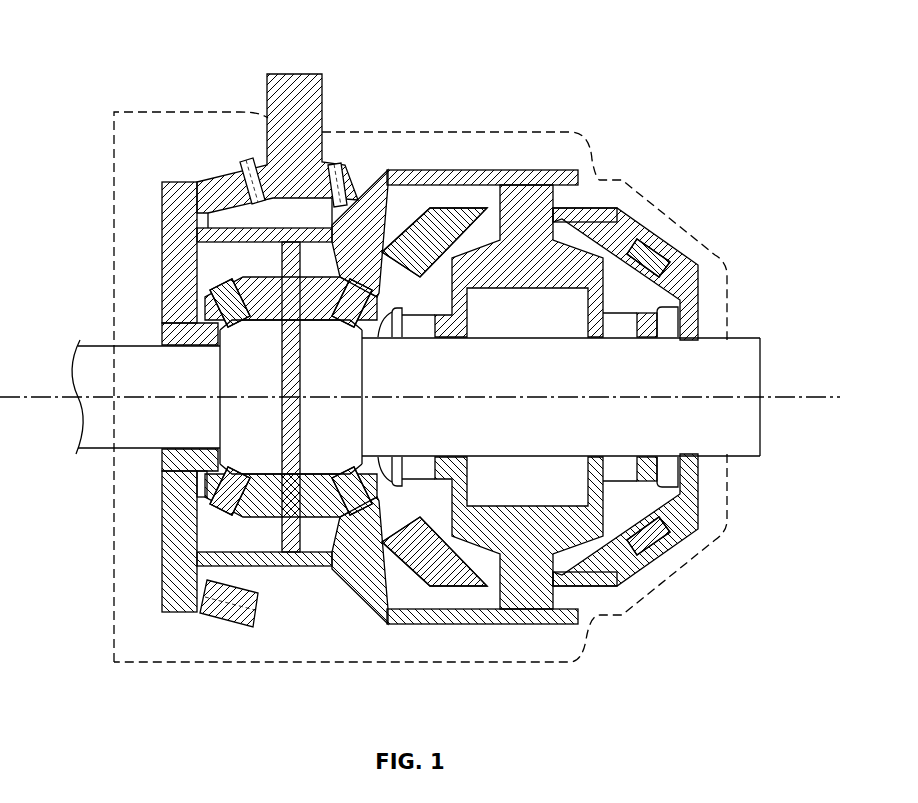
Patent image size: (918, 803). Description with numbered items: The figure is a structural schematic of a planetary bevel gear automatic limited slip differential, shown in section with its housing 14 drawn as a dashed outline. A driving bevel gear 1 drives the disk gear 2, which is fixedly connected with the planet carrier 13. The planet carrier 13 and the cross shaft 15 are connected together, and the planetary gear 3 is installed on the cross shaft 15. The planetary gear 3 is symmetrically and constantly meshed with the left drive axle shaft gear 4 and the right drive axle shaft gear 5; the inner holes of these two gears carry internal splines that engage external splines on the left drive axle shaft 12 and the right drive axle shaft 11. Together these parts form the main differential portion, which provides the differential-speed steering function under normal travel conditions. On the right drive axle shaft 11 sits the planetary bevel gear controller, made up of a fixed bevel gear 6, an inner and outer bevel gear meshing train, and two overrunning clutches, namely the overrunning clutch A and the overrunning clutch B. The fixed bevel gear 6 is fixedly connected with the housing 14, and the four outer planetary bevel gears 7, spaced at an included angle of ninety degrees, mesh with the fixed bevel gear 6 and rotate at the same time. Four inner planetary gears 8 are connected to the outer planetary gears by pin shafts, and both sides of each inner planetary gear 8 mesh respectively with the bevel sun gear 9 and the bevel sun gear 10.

The driving bevel gear 1 is at (218, 316).
The disk gear 2 is at (222, 185).
The planetary gear 3 is at (320, 296).
The left drive axle shaft gear 4 is at (243, 333).
The right drive axle shaft gear 5 is at (375, 300).
The fixed bevel gear 6 is at (677, 270).
The planetary bevel gear 7 is at (567, 218).
The inner planetary gear 8 is at (510, 240).
The bevel sun gear 9 is at (467, 252).
The bevel sun gear 10 is at (600, 263).
The right drive axle shaft 11 is at (460, 420).
The left drive axle shaft 12 is at (188, 557).
The planet carrier 13 is at (170, 423).
The housing 14 is at (170, 128).
The cross shaft 15 is at (293, 543).
The overrunning clutch A is at (443, 462).
The overrunning clutch B is at (643, 470).